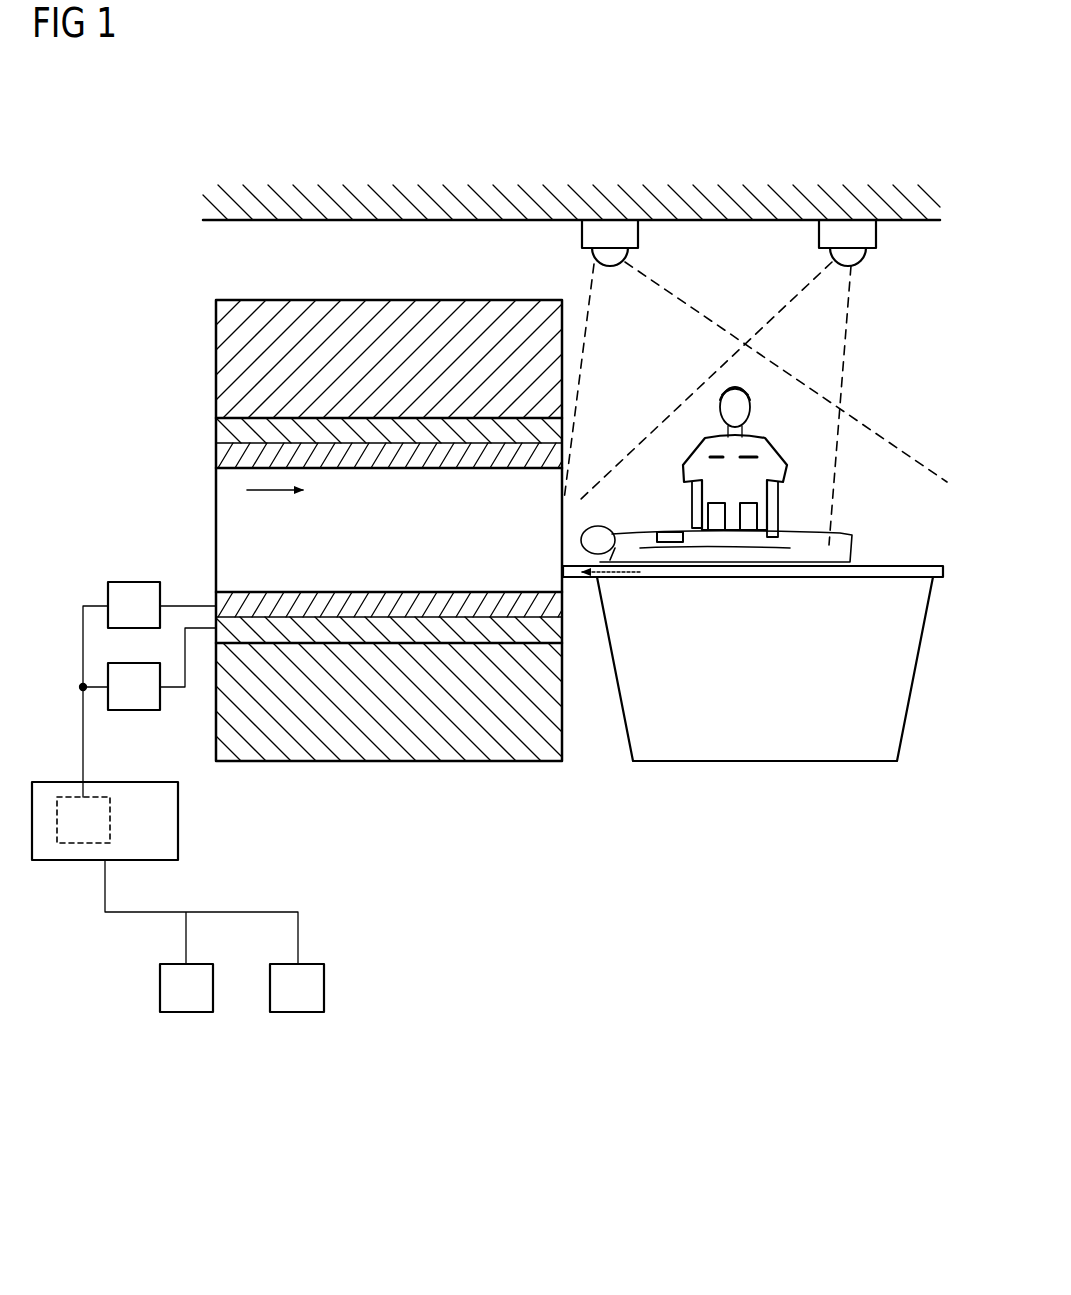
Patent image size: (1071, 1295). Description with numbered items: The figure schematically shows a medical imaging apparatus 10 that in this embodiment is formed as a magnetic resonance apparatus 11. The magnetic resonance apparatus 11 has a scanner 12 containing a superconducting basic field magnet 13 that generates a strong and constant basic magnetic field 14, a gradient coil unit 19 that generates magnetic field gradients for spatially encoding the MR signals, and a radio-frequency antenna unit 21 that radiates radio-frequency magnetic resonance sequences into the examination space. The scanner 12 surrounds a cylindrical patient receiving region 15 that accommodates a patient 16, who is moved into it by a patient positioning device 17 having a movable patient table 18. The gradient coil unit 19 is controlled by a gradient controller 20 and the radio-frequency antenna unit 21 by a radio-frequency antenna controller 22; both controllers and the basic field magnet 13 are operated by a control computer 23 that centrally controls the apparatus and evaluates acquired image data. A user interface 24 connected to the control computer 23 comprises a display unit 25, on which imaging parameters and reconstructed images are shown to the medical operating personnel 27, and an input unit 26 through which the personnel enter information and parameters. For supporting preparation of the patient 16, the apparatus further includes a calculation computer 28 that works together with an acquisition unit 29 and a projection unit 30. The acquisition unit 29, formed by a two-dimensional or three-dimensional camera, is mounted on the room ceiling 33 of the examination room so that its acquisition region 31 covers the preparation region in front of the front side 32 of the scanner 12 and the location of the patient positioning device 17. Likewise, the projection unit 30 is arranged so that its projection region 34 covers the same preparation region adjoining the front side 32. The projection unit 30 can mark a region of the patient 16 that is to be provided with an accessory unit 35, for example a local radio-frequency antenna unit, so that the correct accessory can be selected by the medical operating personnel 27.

The medical imaging apparatus 10 is at (153, 296).
The magnetic resonance apparatus 11 is at (398, 930).
The scanner 12 is at (214, 363).
The superconducting basic field magnet 13 is at (461, 762).
The basic magnetic field 14 is at (281, 492).
The patient receiving region 15 is at (241, 568).
The patient 16 is at (805, 545).
The patient positioning device 17 is at (820, 790).
The patient table 18 is at (890, 562).
The gradient coil unit 19 is at (363, 628).
The gradient controller 20 is at (130, 712).
The radio-frequency antenna unit 21 is at (435, 603).
The radio-frequency antenna controller 22 is at (130, 581).
The control computer 23 is at (180, 817).
The user interface 24 is at (242, 1078).
The display unit 25 is at (297, 1014).
The input unit 26 is at (185, 1014).
The medical operating personnel 27 is at (695, 447).
The calculation computer 28 is at (73, 846).
The acquisition unit 29 is at (606, 228).
The projection unit 30 is at (846, 228).
The acquisition region 31 is at (670, 330).
The front side 32 is at (567, 340).
The room ceiling 33 is at (345, 218).
The projection region 34 is at (830, 340).
The accessory unit 35 is at (668, 530).